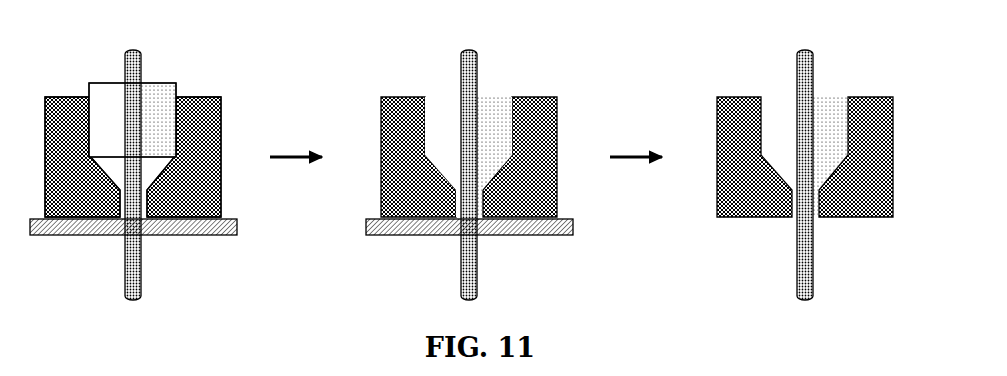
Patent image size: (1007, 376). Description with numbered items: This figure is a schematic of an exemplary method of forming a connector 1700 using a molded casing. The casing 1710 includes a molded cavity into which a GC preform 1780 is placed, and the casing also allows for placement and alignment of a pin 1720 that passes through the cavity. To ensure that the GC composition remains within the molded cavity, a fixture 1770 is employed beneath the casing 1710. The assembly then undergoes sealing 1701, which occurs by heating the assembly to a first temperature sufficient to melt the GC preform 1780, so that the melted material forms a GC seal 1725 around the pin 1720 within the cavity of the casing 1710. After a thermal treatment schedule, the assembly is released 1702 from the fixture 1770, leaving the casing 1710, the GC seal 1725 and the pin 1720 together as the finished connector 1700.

The connector 1700 is at (878, 57).
The sealing 1701 is at (297, 132).
The release 1702 is at (638, 132).
The casing 1710 is at (133, 157).
The pin 1720 is at (145, 278).
The GC seal 1725 is at (497, 95).
The fixture 1770 is at (239, 229).
The GC preform 1780 is at (178, 88).